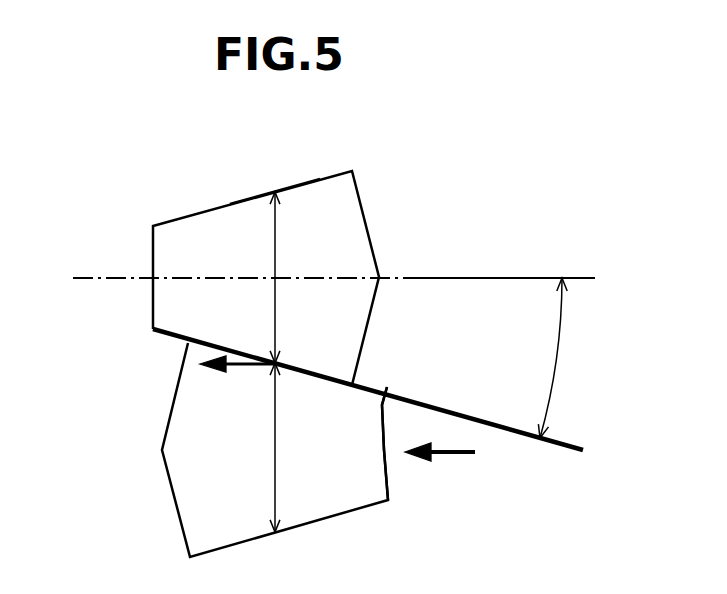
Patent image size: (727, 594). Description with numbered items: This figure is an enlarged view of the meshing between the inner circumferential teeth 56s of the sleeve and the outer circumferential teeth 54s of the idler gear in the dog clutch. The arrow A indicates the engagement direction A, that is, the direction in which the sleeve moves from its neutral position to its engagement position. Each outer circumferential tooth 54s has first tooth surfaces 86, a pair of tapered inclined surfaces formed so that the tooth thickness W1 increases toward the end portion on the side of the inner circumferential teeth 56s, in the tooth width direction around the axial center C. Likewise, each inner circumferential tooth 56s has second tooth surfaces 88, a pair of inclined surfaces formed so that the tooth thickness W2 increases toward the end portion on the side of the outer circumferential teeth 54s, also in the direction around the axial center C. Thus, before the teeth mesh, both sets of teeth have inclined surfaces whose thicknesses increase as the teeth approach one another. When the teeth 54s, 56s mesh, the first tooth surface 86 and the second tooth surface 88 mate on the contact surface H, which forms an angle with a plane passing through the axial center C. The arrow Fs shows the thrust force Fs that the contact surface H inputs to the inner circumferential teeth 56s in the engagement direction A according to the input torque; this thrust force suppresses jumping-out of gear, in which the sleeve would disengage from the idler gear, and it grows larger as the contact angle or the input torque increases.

The outer circumferential teeth 54s is at (242, 217).
The inner circumferential teeth 56s is at (293, 517).
The first tooth surfaces 86 is at (275, 192).
The second tooth surfaces 88 is at (380, 396).
The contact surface H is at (277, 360).
The axial center C is at (90, 276).
The tooth thickness W1 is at (293, 277).
The tooth thickness W2 is at (294, 447).
The thrust force Fs is at (244, 370).
The engagement direction A is at (449, 453).